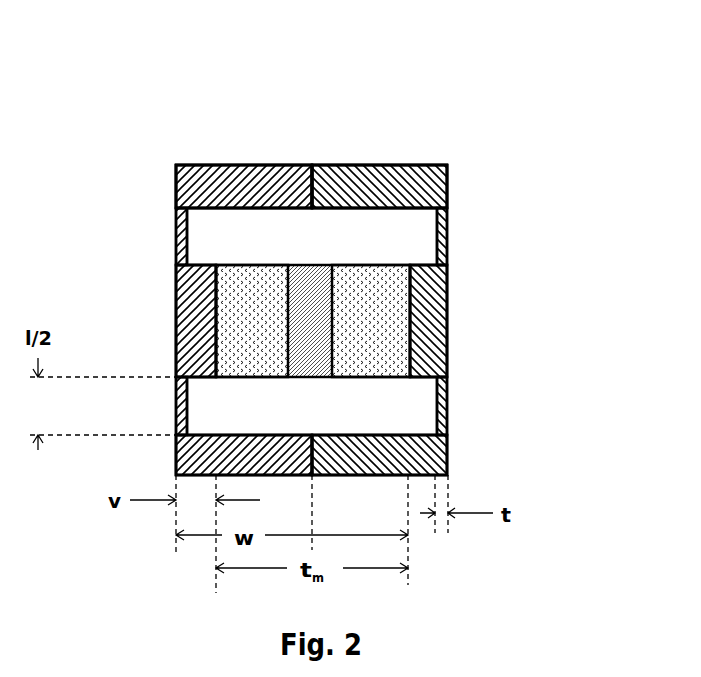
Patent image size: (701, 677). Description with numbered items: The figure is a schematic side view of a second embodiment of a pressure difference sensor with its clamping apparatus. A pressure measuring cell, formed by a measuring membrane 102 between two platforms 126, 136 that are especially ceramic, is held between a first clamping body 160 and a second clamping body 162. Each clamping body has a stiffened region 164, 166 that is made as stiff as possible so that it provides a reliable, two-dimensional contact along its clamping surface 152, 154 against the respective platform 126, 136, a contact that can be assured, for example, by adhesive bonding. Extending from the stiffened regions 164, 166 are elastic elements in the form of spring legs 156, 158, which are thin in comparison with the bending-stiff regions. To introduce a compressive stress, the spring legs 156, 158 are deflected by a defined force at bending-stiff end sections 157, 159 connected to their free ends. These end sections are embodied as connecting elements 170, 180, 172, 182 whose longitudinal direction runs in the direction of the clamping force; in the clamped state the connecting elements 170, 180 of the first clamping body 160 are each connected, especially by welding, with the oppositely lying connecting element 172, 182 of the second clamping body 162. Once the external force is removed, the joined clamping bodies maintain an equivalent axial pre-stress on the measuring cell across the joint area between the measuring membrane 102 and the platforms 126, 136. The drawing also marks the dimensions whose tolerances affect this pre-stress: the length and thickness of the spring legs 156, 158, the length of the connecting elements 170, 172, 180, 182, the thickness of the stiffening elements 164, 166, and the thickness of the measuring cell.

The center membrane region 102 is at (302, 278).
The platform 126 is at (253, 280).
The platform 136 is at (355, 280).
The clamping surface 152 is at (176, 297).
The clamping surface 154 is at (447, 295).
The spring leg 156 is at (176, 405).
The bending-stiff end section 157 is at (176, 458).
The spring leg 158 is at (503, 400).
The bending-stiff end section 159 is at (503, 455).
The clamping body 160 is at (210, 165).
The clamping body 162 is at (420, 165).
The stiffened region 164 is at (176, 318).
The stiffened region 166 is at (447, 320).
The connecting element 170 is at (265, 165).
The connecting element 172 is at (338, 165).
The connecting element 180 is at (270, 458).
The connecting element 182 is at (360, 458).